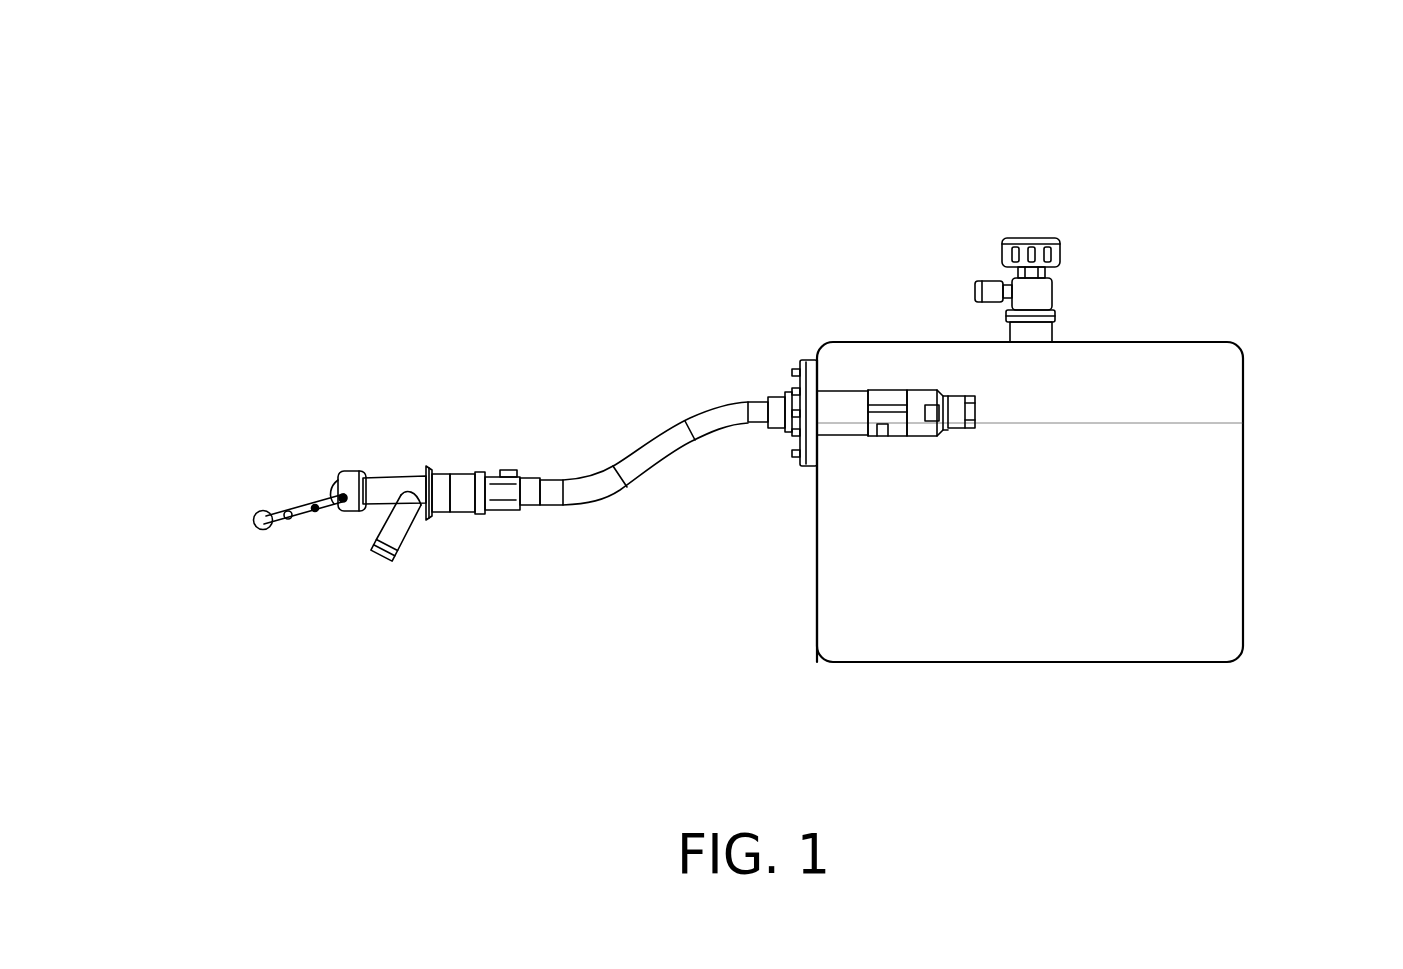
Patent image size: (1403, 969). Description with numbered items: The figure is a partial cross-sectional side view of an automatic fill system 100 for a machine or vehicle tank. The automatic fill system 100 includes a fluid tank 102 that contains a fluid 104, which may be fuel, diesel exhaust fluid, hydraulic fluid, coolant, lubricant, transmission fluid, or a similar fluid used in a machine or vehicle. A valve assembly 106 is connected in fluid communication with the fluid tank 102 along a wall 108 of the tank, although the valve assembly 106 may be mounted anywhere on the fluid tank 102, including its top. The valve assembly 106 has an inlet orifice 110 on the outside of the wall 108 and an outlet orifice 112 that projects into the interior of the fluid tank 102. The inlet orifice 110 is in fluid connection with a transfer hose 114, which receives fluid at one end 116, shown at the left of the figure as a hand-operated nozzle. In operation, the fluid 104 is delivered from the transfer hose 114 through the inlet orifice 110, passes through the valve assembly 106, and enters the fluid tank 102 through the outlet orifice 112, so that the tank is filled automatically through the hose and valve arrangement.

The automatic fill system 100 is at (451, 132).
The fluid tank 102 is at (1244, 463).
The fluid 104 is at (1030, 486).
The valve assembly 106 is at (878, 390).
The wall 108 is at (817, 500).
The inlet orifice 110 is at (780, 395).
The outlet orifice 112 is at (976, 400).
The transfer hose 114 is at (640, 452).
The end 116 is at (288, 415).